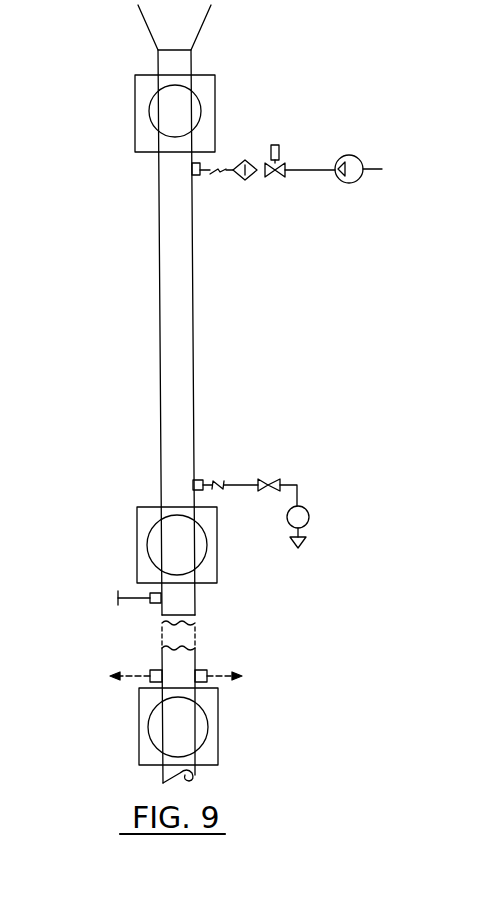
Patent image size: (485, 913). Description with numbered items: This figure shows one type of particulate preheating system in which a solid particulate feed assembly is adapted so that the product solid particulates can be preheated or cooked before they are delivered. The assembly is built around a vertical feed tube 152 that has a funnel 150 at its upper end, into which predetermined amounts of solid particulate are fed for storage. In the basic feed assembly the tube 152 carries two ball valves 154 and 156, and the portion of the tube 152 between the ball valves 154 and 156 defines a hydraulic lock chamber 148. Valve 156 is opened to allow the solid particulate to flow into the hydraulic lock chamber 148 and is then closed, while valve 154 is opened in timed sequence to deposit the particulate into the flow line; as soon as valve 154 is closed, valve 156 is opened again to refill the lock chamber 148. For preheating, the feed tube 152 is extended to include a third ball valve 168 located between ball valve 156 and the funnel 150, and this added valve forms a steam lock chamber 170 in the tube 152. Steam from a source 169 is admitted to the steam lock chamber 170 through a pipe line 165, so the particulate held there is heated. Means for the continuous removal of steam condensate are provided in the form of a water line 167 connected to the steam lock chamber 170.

The hydraulic lock chamber 148 is at (150, 251).
The funnel 150 is at (213, 19).
The feed tube 152 is at (193, 256).
The ball valve 154 is at (218, 718).
The ball valve 156 is at (217, 576).
The pipe line 165 is at (313, 171).
The water line 167 is at (242, 485).
The third ball valve 168 is at (227, 88).
The steam source 169 is at (352, 183).
The steam lock chamber 170 is at (193, 366).